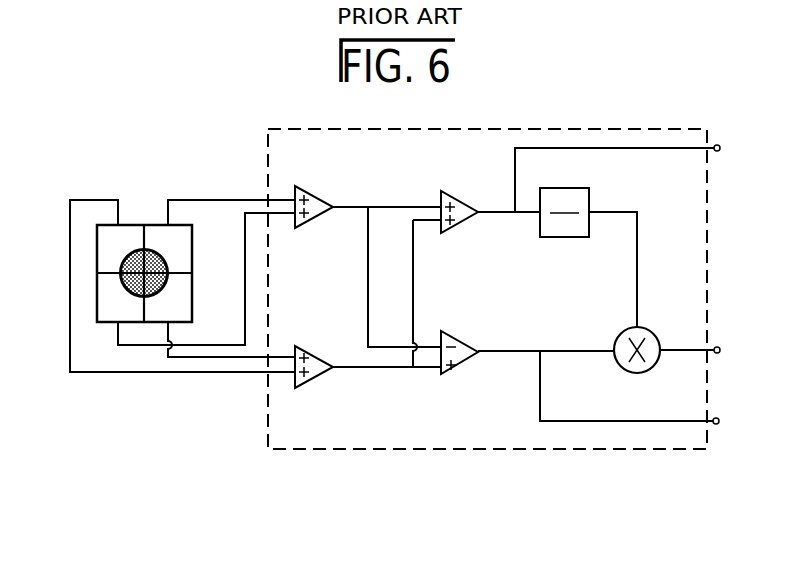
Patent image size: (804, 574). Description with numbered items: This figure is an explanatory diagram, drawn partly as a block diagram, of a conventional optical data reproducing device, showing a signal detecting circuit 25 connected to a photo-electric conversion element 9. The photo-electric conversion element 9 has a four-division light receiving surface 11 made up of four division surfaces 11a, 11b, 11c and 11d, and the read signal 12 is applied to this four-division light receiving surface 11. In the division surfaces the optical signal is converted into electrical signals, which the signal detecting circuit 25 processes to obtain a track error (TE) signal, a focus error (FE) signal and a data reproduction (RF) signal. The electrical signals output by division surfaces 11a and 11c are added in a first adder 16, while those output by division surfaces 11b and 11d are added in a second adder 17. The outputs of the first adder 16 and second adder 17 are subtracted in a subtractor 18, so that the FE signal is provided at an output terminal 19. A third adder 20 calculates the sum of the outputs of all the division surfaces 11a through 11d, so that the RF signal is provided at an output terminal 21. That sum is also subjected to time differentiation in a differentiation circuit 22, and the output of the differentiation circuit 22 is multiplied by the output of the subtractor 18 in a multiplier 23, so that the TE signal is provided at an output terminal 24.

The photo-electric conversion element 9 is at (139, 241).
The four-division light receiving surface 11 is at (139, 241).
The division surface 11a is at (183, 228).
The division surface 11b is at (131, 232).
The division surface 11c is at (100, 305).
The division surface 11d is at (183, 313).
The read signal 12 is at (168, 291).
The first adder 16 is at (318, 196).
The second adder 17 is at (308, 344).
The subtractor 18 is at (452, 336).
The output terminal 19 is at (721, 416).
The third adder 20 is at (460, 196).
The output terminal 21 is at (720, 152).
The differentiation circuit 22 is at (590, 196).
The multiplier 23 is at (655, 335).
The output terminal 24 is at (722, 344).
The signal detecting circuit 25 is at (506, 130).